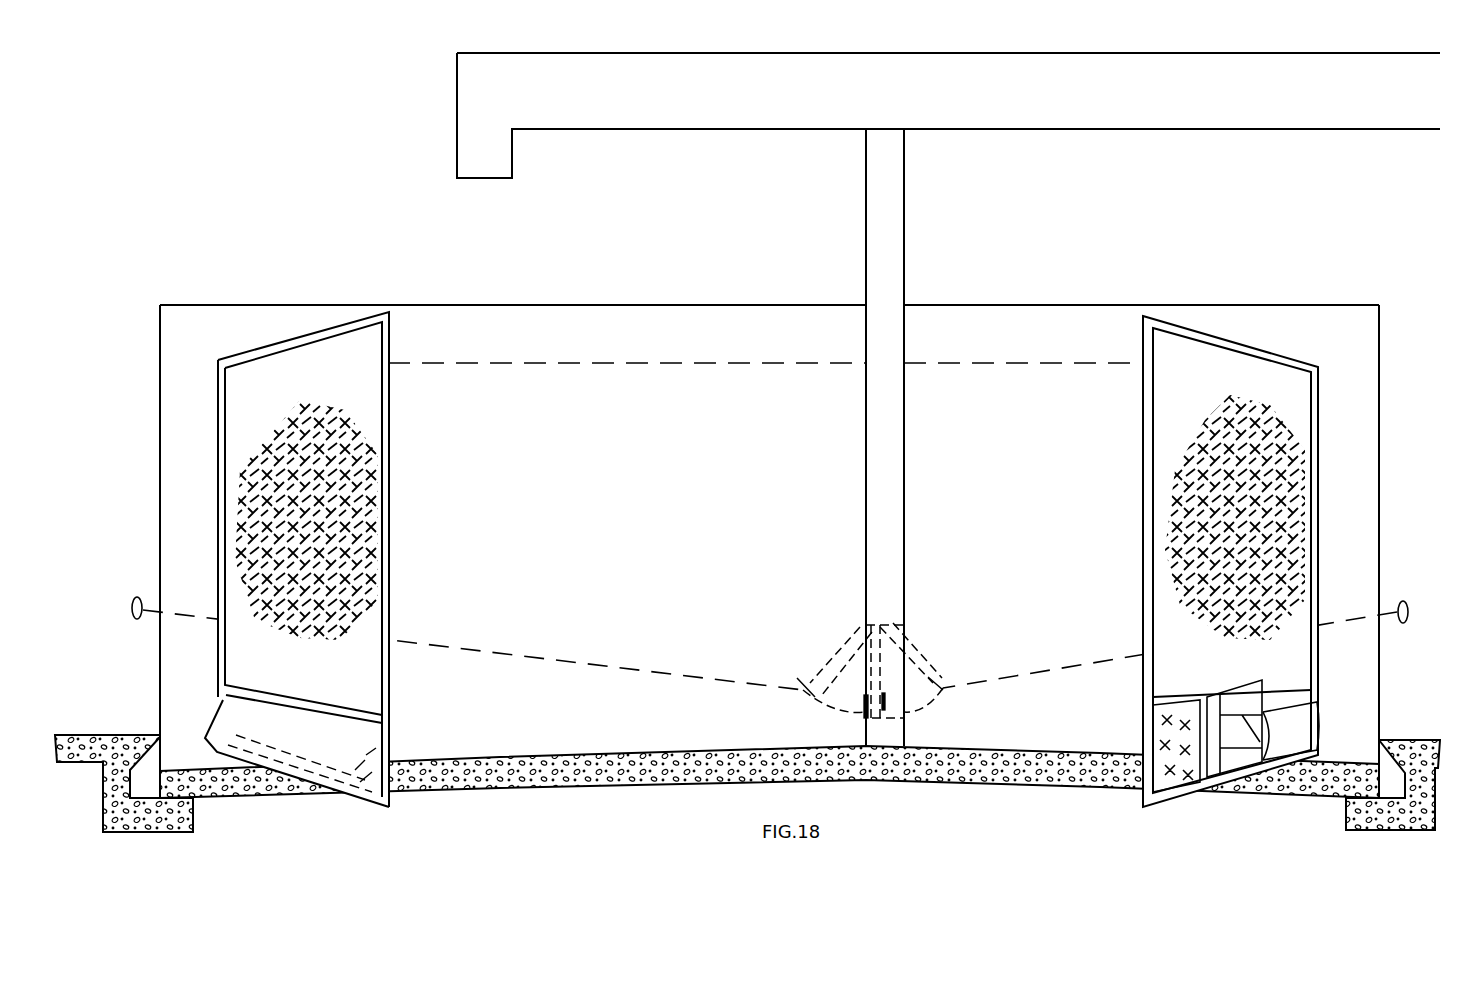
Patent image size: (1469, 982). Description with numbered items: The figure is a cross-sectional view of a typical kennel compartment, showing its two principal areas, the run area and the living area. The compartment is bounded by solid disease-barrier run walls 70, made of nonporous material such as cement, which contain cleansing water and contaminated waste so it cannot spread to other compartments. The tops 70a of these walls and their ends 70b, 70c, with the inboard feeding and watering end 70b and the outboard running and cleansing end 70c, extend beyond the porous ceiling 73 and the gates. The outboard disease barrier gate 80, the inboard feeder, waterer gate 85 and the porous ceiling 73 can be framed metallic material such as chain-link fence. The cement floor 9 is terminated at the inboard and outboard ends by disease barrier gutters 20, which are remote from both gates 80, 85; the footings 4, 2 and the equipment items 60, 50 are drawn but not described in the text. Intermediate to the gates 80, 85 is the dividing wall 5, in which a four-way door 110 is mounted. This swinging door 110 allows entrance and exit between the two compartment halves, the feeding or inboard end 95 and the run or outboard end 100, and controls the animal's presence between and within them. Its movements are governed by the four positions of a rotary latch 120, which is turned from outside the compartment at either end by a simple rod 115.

The run walls 70 is at (774, 530).
The tops of the barrier walls 70a is at (632, 305).
The inboard end of the barrier walls 70b is at (1379, 345).
The outboard end of the barrier walls 70c is at (159, 343).
The porous ceiling 73 is at (765, 384).
The dividing wall 5 is at (866, 494).
The floor 9 is at (695, 751).
The left footing 4 is at (108, 735).
The right footing 2 is at (1426, 740).
The disease barrier gutters 20 is at (143, 833).
The outboard end 100 is at (467, 659).
The inboard end 95 is at (1201, 660).
The rod 115 is at (1409, 608).
The four-way door 110 is at (917, 667).
The rotary latch 120 is at (866, 707).
The outboard disease barrier gate 80 is at (315, 680).
The inboard feeder, waterer gate 85 is at (1231, 561).
The control unit 60 is at (1234, 728).
The motor 50 is at (1291, 731).